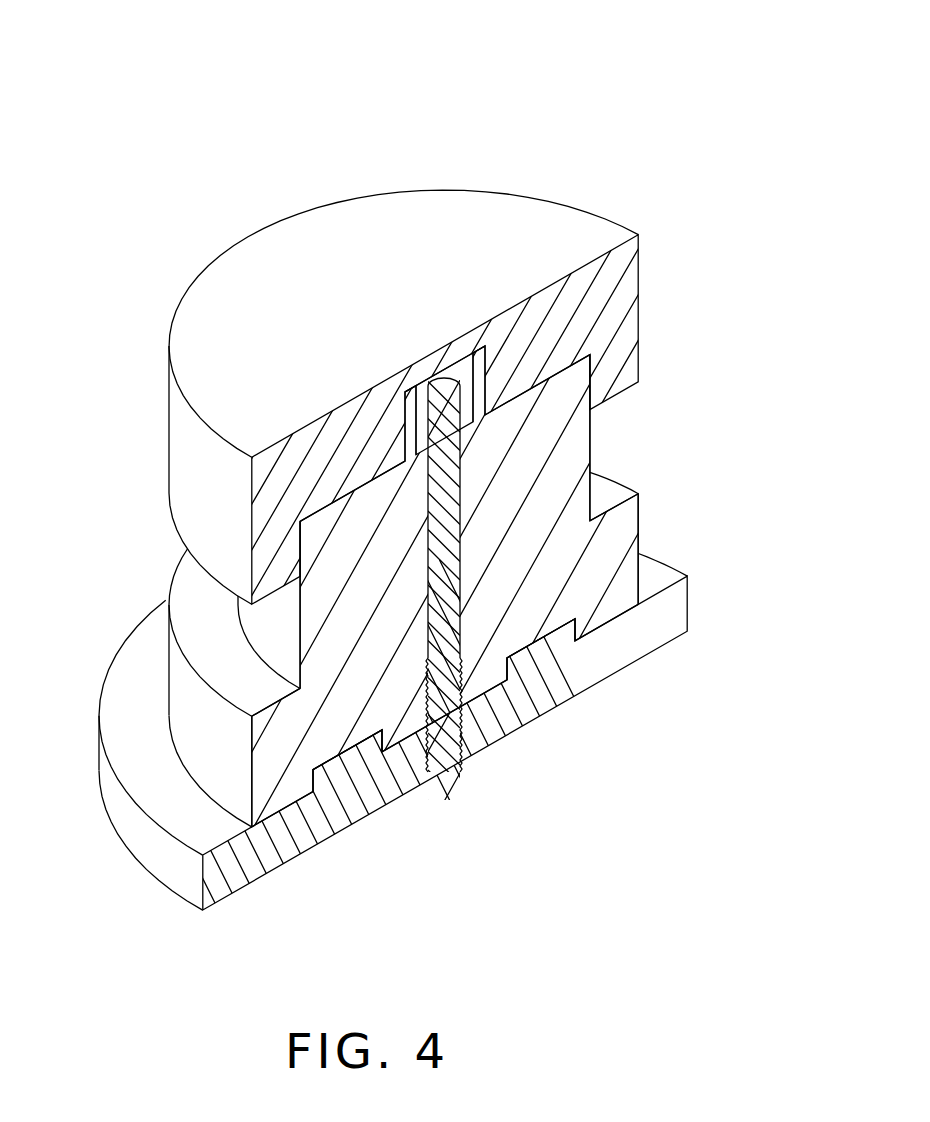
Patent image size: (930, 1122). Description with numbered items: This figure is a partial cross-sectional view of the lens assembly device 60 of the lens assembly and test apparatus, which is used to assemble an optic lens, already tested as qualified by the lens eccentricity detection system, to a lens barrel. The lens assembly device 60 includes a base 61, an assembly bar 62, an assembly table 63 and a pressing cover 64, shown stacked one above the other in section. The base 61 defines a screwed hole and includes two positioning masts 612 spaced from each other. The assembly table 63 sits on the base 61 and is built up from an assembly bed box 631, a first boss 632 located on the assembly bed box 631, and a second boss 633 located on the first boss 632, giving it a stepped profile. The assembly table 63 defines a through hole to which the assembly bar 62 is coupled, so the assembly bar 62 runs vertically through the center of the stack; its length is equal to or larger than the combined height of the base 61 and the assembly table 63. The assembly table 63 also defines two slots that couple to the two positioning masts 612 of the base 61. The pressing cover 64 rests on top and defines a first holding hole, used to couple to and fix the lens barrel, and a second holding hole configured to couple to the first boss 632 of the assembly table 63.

The lens assembly device 60 is at (331, 72).
The base 61 is at (673, 630).
The positioning masts 612 is at (563, 633).
The assembly bar 62 is at (443, 548).
The assembly table 63 is at (763, 388).
The assembly bed box 631 is at (615, 528).
The first boss 632 is at (567, 471).
The second boss 633 is at (466, 392).
The pressing cover 64 is at (503, 223).